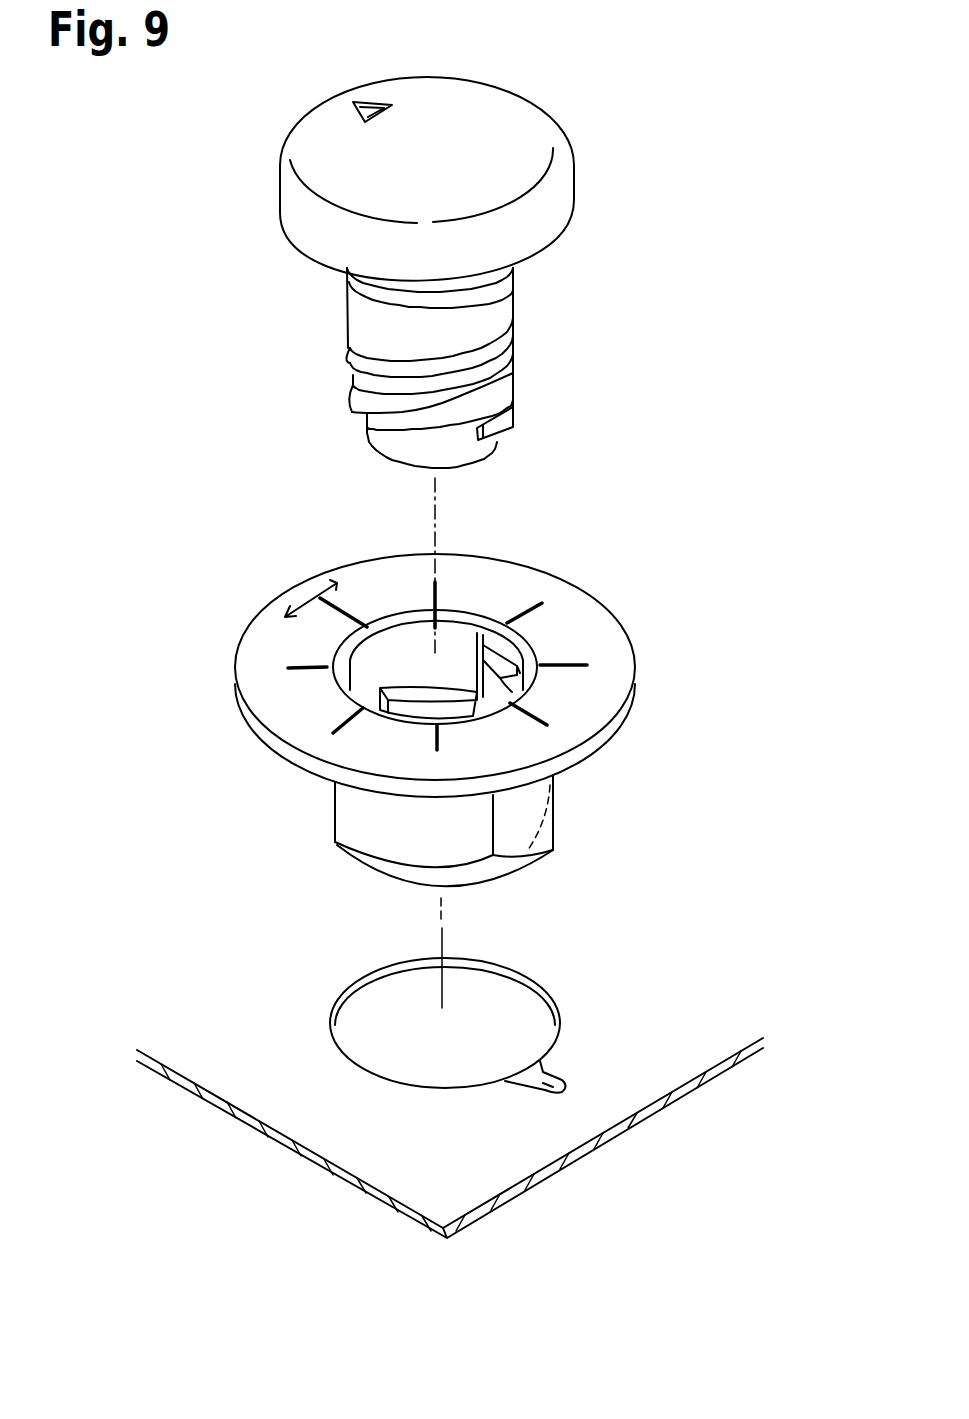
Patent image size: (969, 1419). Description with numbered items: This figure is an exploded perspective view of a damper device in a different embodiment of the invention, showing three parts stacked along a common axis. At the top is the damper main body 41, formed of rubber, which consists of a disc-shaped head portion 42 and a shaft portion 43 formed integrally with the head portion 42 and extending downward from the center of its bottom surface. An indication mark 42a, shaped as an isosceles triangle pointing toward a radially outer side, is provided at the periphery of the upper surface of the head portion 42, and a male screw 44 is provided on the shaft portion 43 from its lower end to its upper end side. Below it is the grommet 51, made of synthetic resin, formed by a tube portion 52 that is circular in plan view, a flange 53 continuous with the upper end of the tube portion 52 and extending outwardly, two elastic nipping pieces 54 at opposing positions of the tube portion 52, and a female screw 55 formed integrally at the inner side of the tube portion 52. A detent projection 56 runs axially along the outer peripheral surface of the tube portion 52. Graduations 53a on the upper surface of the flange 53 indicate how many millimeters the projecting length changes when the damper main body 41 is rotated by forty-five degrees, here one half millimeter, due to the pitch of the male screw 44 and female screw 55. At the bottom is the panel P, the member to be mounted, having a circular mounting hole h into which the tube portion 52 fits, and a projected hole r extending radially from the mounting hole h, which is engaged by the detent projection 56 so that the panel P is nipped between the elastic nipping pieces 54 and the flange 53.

The damper main body 41 is at (295, 276).
The head portion 42 is at (508, 132).
The indication mark 42a is at (367, 103).
The shaft portion 43 is at (488, 300).
The male screw 44 is at (513, 408).
The grommet 51 is at (635, 585).
The tube portion 52 is at (355, 812).
The flange 53 is at (508, 585).
The graduations 53a is at (455, 562).
The elastic nipping pieces 54 is at (503, 680).
The female screw 55 is at (412, 685).
The detent projection 56 is at (553, 840).
The panel P is at (238, 1066).
The mounting hole h is at (370, 1045).
The projected hole r is at (563, 1092).